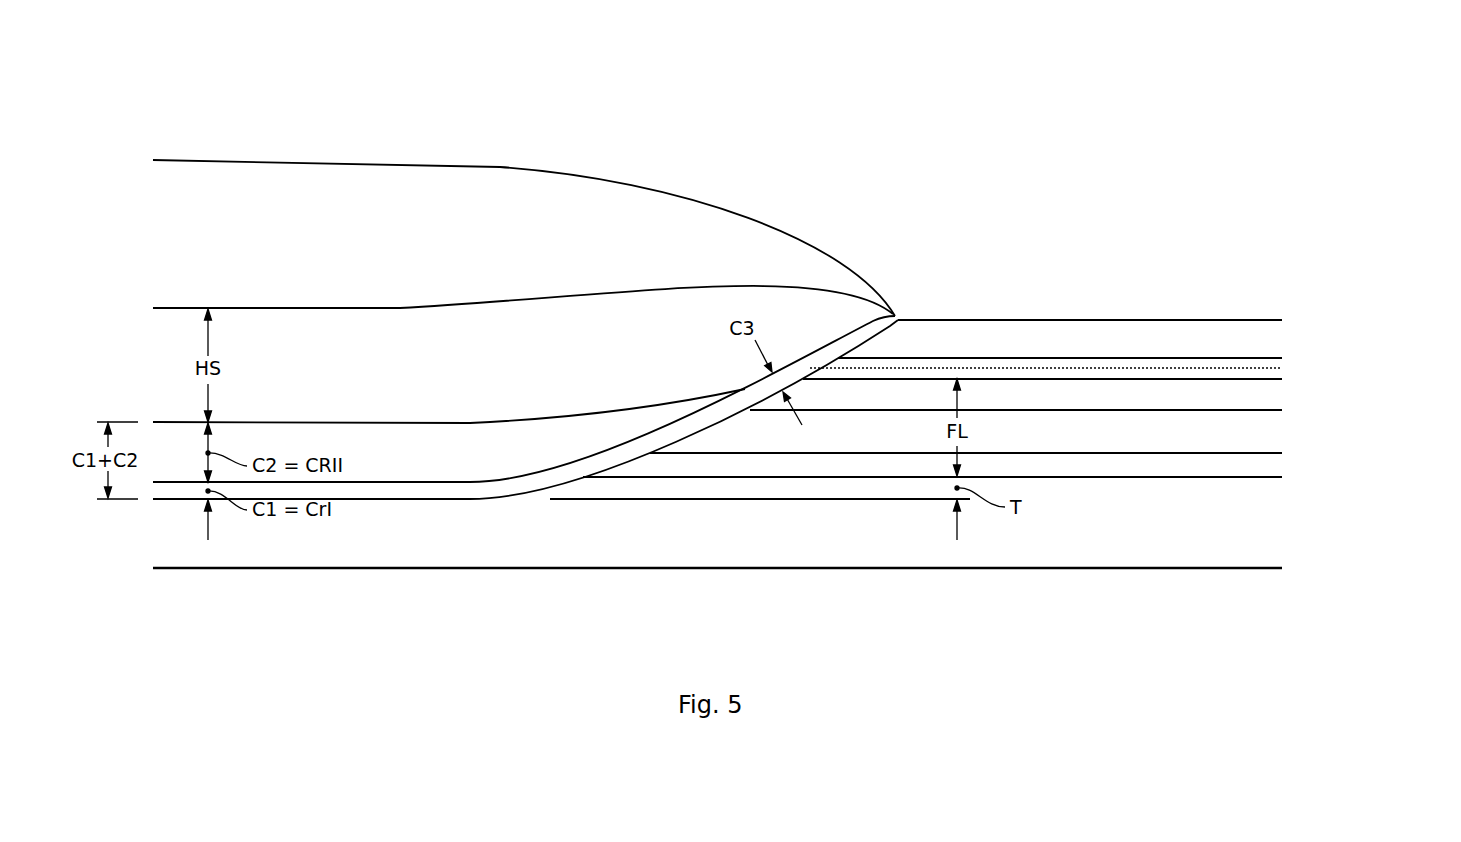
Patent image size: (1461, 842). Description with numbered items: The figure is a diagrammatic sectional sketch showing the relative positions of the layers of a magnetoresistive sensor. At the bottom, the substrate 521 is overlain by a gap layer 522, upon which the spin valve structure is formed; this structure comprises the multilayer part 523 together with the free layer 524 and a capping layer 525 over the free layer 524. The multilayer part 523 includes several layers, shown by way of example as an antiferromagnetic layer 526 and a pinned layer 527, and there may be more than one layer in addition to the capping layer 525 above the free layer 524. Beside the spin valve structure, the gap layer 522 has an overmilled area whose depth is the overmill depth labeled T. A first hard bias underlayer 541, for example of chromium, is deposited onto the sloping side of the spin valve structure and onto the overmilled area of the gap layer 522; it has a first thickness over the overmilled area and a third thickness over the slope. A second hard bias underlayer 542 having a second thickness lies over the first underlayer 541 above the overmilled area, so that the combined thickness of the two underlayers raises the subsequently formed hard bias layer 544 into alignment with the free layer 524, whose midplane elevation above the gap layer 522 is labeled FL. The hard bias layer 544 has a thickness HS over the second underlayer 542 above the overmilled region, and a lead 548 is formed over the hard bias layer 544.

The substrate 521 is at (1137, 623).
The gap layer 522 is at (1137, 539).
The spin valve structure 523 is at (1290, 378).
The free layer 524 is at (1280, 374).
The capping layer 525 is at (1277, 339).
The antiferromagnetic (AFM) layer 526 is at (1137, 445).
The pinned layer 527 is at (1137, 409).
The first hard bias underlayer 541 is at (685, 425).
The second hard bias underlayer 542 is at (509, 458).
The hard bias layer 544 is at (314, 360).
The lead 548 is at (315, 233).